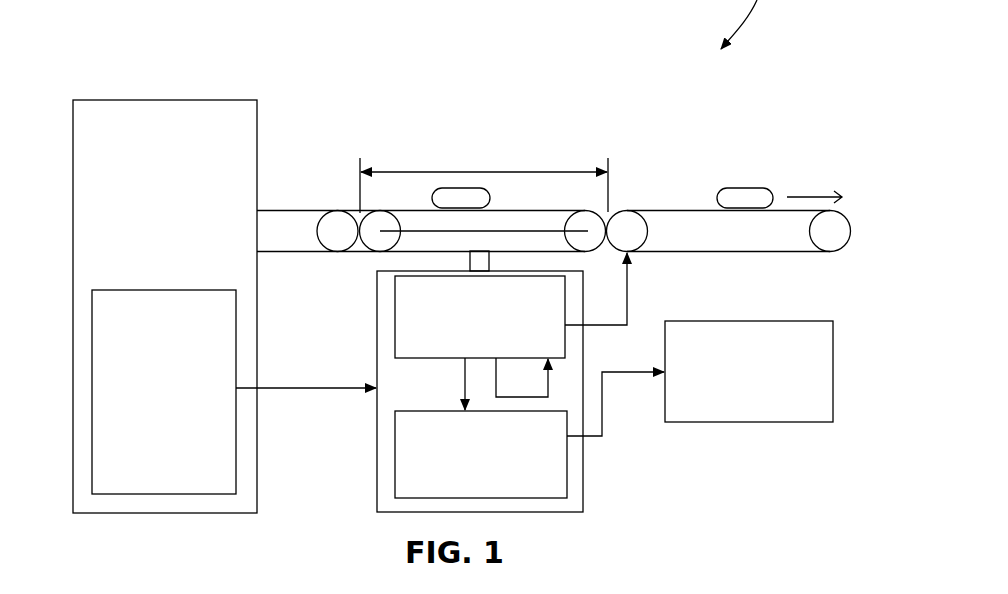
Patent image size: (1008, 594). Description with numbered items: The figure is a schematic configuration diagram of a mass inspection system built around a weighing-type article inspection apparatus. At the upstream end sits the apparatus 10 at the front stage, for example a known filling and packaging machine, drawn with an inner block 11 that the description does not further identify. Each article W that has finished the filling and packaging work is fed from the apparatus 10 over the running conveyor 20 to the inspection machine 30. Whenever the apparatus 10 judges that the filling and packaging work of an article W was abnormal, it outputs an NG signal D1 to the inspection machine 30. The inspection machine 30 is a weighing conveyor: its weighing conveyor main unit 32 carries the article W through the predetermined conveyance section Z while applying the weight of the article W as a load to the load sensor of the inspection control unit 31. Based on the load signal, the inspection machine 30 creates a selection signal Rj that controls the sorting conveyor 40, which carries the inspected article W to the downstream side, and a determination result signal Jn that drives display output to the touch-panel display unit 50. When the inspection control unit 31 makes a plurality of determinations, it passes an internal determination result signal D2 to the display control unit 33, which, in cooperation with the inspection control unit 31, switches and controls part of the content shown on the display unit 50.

The apparatus at the front stage 10 is at (174, 96).
The controller 11 is at (175, 403).
The running conveyor 20 is at (289, 201).
The inspection machine 30 is at (378, 427).
The inspection control unit 31 is at (491, 326).
The weighing conveyor main unit 32 is at (530, 230).
The display control unit 33 is at (494, 466).
The sorting conveyor 40 is at (670, 197).
The display unit 50 is at (762, 379).
The article W is at (468, 188).
The conveyance section Z is at (484, 180).
The NG signal D1 is at (306, 375).
The internal determination result signal D2 is at (506, 384).
The selection signal Rj is at (596, 289).
The determination result signal Jn is at (615, 394).